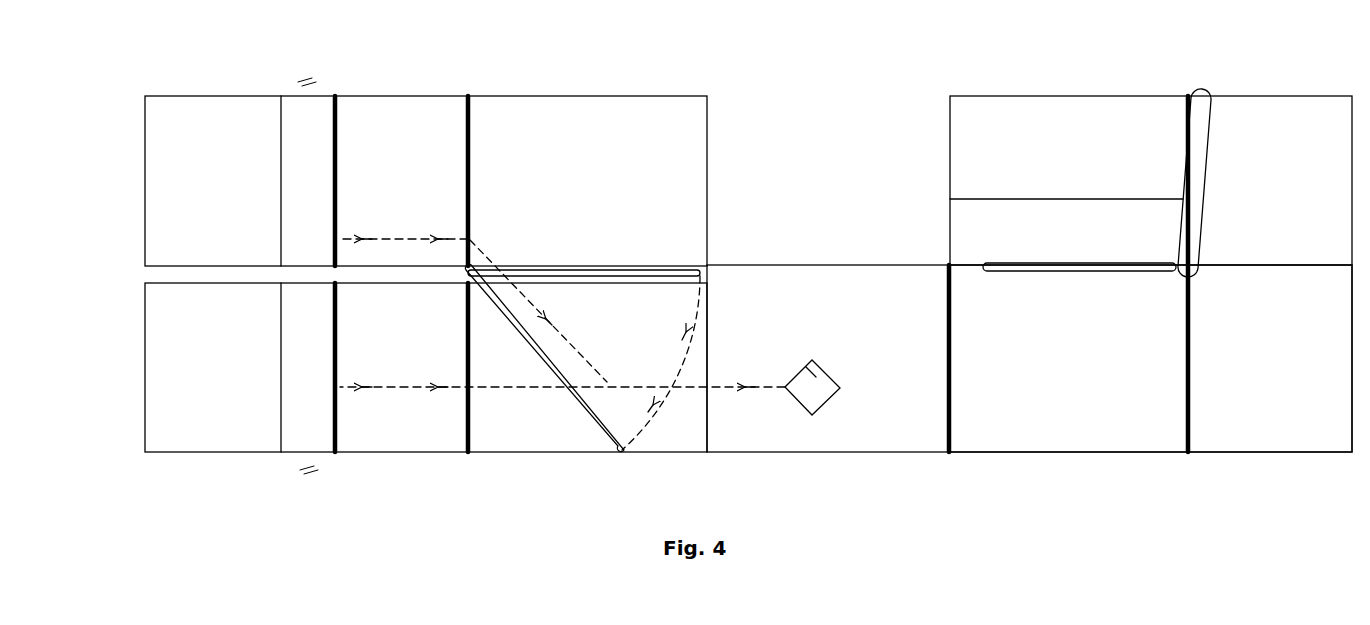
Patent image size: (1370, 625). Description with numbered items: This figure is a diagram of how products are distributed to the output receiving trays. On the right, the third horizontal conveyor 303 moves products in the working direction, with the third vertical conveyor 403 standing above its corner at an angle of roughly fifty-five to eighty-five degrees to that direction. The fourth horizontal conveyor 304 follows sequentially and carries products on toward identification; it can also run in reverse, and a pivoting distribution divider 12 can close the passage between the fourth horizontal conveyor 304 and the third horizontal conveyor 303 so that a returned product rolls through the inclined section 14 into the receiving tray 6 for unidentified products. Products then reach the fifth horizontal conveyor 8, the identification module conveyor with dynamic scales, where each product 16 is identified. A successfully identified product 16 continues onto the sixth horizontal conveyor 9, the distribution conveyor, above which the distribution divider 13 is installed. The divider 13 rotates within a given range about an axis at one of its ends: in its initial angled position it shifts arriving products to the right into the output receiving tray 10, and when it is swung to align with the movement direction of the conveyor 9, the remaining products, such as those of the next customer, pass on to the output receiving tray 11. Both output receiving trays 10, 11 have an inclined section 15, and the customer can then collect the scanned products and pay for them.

The receiving tray for unidentified products 6 is at (950, 158).
The fifth horizontal conveyor 8 is at (827, 453).
The sixth horizontal conveyor 9 is at (570, 453).
The output receiving tray 10 is at (146, 147).
The output receiving tray 11 is at (146, 333).
The distribution divider of the fourth horizontal conveyor 12 is at (1110, 275).
The distribution divider of the sixth horizontal conveyor 13 is at (545, 368).
The inclined section of the receiving tray for unidentified products 14 is at (955, 225).
The inclined section of the output receiving trays 15 is at (296, 112).
The product 16 is at (808, 360).
The third horizontal conveyor 303 is at (1260, 455).
The fourth horizontal conveyor 304 is at (1090, 455).
The third vertical conveyor 403 is at (1206, 177).